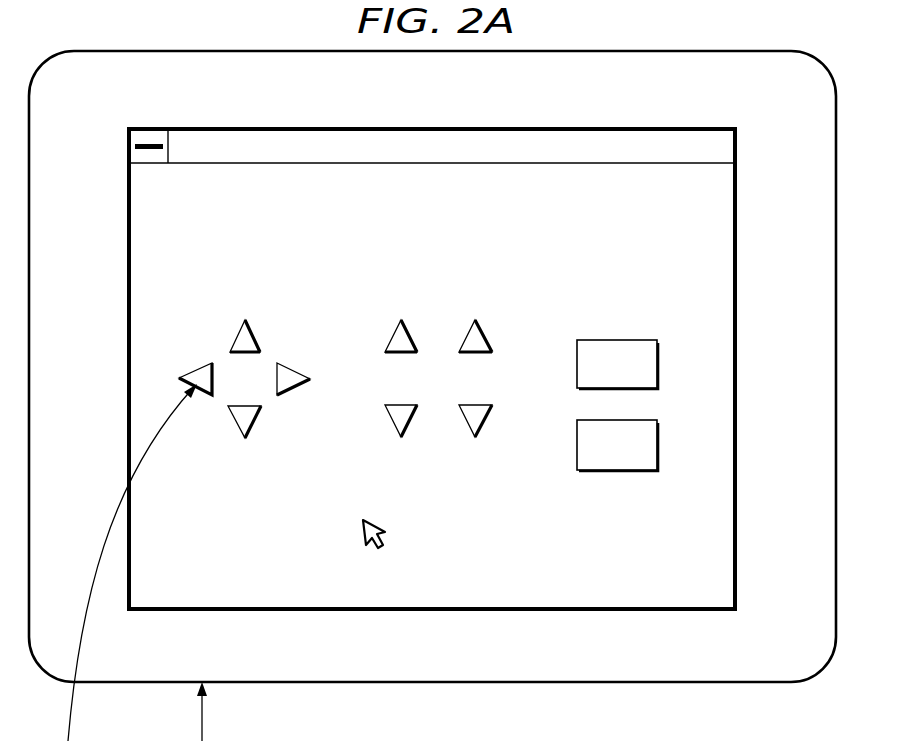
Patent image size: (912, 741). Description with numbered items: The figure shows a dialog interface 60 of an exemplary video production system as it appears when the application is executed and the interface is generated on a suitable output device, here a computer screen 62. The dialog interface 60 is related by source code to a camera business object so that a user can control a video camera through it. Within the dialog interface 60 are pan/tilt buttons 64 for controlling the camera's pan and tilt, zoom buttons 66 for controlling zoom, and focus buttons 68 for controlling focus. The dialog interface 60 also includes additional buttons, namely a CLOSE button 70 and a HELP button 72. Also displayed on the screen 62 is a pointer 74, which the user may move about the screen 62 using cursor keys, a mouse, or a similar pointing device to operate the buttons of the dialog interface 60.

The dialog interface 60 is at (127, 267).
The computer screen 62 is at (445, 682).
The pan/tilt buttons 64 is at (232, 372).
The zoom buttons 66 is at (397, 378).
The focus buttons 68 is at (477, 378).
The CLOSE button 70 is at (659, 364).
The HELP button 72 is at (659, 445).
The pointer 74 is at (384, 523).